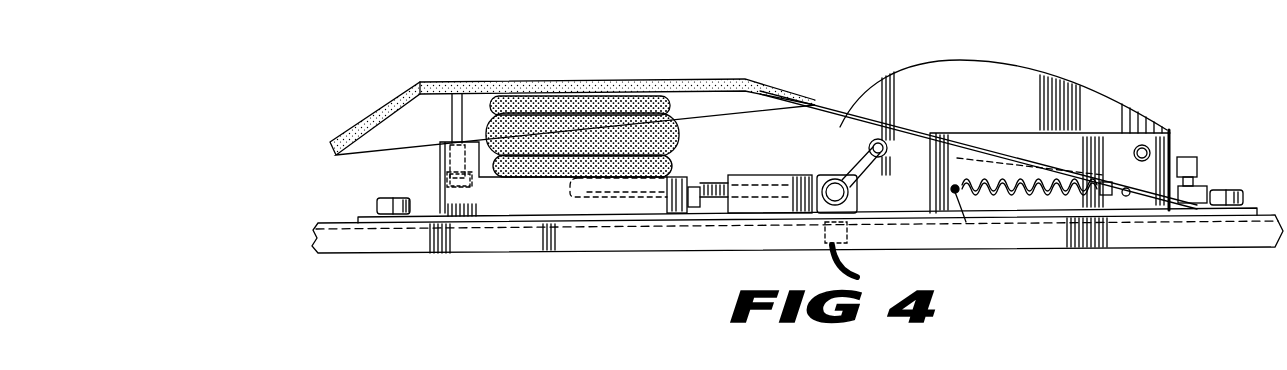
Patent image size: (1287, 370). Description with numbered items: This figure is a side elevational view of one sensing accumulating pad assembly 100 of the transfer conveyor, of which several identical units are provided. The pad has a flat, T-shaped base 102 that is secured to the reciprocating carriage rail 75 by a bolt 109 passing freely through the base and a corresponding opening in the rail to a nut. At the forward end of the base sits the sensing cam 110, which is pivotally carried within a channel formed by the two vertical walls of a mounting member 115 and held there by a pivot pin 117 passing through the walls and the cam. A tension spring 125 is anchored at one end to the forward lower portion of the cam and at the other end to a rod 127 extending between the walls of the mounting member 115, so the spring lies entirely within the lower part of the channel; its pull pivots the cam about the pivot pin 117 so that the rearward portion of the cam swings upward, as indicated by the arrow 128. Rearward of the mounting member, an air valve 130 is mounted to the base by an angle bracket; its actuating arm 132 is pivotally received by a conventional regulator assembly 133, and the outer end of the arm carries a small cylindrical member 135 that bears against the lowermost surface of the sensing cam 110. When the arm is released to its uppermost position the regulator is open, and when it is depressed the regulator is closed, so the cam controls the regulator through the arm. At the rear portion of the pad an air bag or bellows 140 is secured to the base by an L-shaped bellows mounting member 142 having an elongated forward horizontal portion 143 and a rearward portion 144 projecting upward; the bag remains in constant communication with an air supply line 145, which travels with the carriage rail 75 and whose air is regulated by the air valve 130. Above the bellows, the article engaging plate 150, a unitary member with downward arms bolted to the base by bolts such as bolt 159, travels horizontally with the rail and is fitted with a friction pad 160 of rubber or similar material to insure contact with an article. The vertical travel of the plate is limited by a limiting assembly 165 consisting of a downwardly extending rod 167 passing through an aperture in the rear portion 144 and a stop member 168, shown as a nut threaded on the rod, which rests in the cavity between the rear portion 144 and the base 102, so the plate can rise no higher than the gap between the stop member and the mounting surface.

The reciprocating carriage rail 75 is at (482, 248).
The sensing accumulating pad assembly 100 is at (1124, 80).
The base 102 is at (425, 216).
The bolt 109 is at (1198, 166).
The sensing cam 110 is at (971, 102).
The mounting member 115 is at (1068, 155).
The pivot pin 117 is at (1148, 147).
The tension spring 125 is at (990, 181).
The rod 127 is at (976, 218).
The arrow 128 is at (860, 55).
The air valve 130 is at (827, 177).
The actuating arm 132 is at (845, 170).
The regulator assembly 133 is at (757, 155).
The cylindrical member 135 is at (878, 158).
The air bag or bellows 140 is at (607, 100).
The bellows mounting member 142 is at (573, 208).
The forward horizontal portion 143 is at (645, 207).
The rearward portion 144 is at (470, 145).
The air supply line 145 is at (700, 187).
The article engaging plate 150 is at (396, 110).
The bolt 159 is at (1236, 190).
The friction pad 160 is at (587, 80).
The limiting assembly 165 is at (431, 140).
The rod 167 is at (457, 100).
The stop member 168 is at (472, 180).